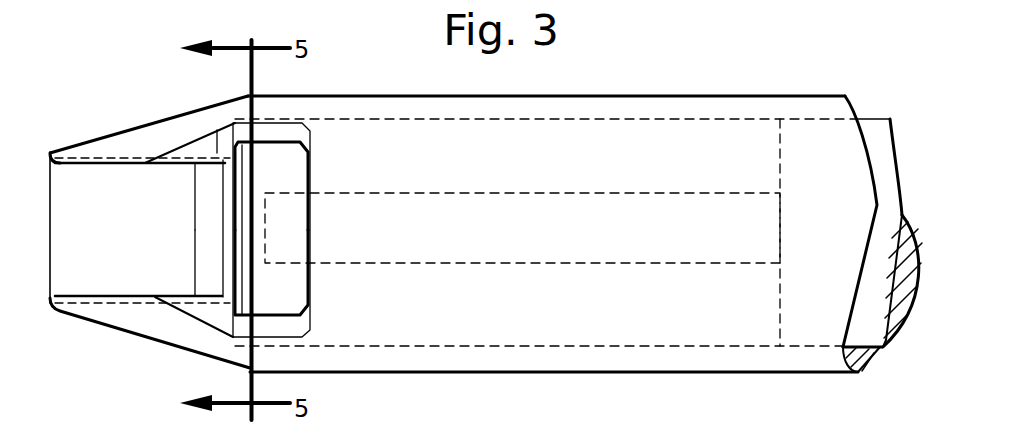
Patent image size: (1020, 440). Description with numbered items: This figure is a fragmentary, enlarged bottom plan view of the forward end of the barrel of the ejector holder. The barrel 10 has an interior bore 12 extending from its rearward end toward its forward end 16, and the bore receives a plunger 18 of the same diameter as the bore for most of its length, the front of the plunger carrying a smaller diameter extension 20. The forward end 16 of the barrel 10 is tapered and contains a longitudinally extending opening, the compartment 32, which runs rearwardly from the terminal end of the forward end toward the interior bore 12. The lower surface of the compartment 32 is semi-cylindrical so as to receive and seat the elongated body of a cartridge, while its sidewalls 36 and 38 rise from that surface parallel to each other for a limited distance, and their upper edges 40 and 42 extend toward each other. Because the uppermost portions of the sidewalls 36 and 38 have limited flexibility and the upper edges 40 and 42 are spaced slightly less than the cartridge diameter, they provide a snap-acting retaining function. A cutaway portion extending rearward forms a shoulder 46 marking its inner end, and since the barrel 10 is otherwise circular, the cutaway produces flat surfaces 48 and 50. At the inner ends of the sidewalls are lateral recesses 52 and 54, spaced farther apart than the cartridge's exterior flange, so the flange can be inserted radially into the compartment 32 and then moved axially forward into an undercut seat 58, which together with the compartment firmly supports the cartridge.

The barrel 10 is at (632, 96).
The interior bore 12 is at (497, 120).
The forward end 16 is at (140, 104).
The plunger 18 is at (878, 135).
The smaller diameter extension 20 is at (520, 225).
The compartment 32 is at (83, 227).
The sidewall 36 is at (178, 165).
The sidewall 38 is at (178, 297).
The upper edge 40 is at (85, 168).
The upper edge 42 is at (103, 296).
The shoulder 46 is at (312, 275).
The flat surface 48 is at (217, 150).
The flat surface 50 is at (220, 316).
The lateral recess 52 is at (280, 142).
The lateral recess 54 is at (270, 313).
The undercut seat 58 is at (203, 213).